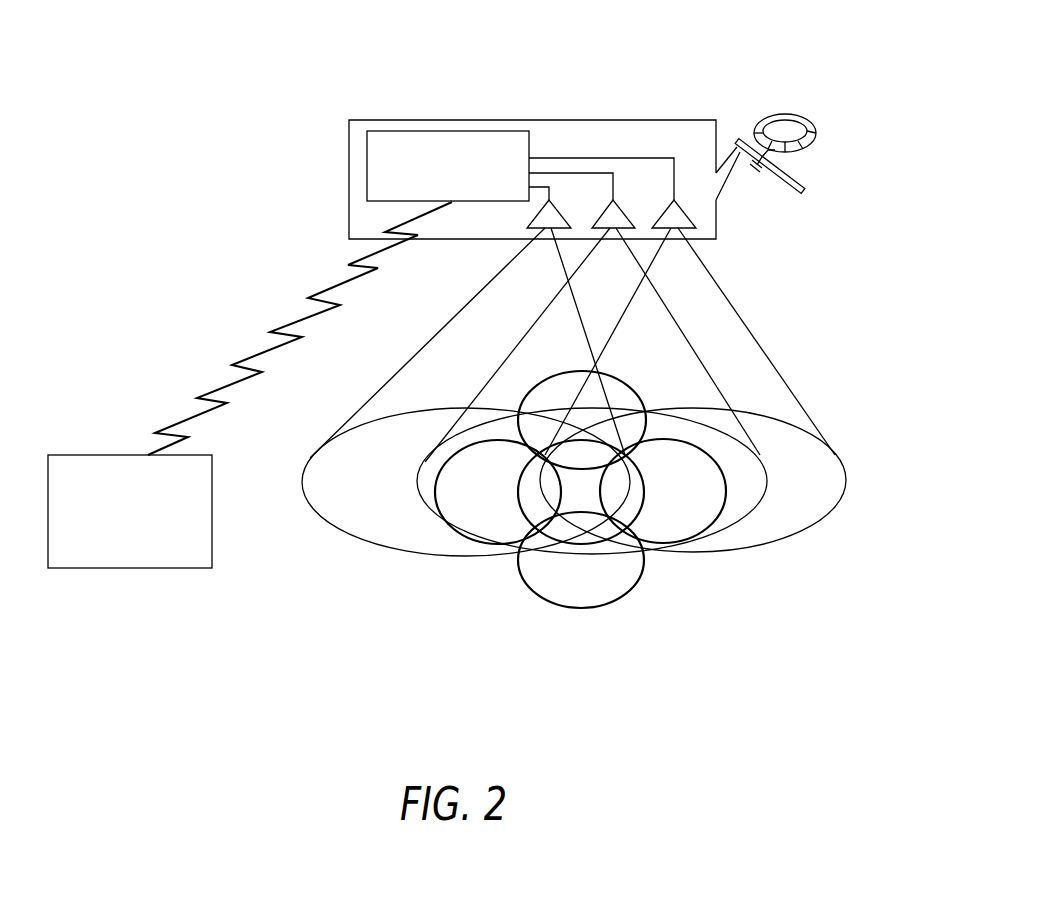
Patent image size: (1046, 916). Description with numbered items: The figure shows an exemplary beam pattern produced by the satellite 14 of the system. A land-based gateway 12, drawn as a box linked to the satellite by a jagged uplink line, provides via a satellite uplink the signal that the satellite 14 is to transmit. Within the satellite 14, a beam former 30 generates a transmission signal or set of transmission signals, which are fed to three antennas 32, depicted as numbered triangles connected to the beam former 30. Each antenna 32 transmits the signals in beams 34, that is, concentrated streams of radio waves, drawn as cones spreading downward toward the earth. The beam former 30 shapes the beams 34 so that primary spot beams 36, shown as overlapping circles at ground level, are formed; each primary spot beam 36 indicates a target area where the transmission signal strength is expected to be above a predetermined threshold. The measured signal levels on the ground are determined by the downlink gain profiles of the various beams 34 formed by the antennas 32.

The gateway 12 is at (130, 511).
The satellite 14 is at (805, 193).
The beam former 30 is at (532, 179).
The antenna 32 is at (557, 210).
The beam 34 is at (527, 268).
The primary spot beam 36 is at (613, 393).